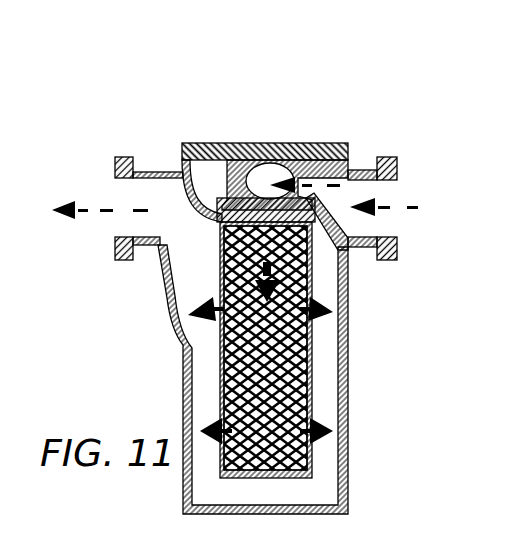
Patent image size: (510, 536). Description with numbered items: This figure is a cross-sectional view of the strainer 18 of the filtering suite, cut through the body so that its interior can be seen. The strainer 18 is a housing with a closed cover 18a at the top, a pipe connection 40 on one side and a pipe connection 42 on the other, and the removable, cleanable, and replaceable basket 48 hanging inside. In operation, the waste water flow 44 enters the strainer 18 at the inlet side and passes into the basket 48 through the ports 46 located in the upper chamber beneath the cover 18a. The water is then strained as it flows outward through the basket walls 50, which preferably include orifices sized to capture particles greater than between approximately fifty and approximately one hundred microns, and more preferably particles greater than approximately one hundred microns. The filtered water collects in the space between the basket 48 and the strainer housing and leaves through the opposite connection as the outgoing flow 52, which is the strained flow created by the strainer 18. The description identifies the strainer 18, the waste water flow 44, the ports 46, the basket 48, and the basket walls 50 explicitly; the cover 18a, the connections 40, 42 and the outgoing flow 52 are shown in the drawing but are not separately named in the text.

The strainer 18 is at (206, 110).
The housing cover 18a is at (335, 145).
The inlet 40 is at (388, 200).
The outlet 42 is at (163, 192).
The waste water flow 44 is at (410, 212).
The ports 46 is at (282, 147).
The basket 48 is at (310, 358).
The basket walls 50 is at (348, 430).
The outlet flow 52 is at (90, 213).